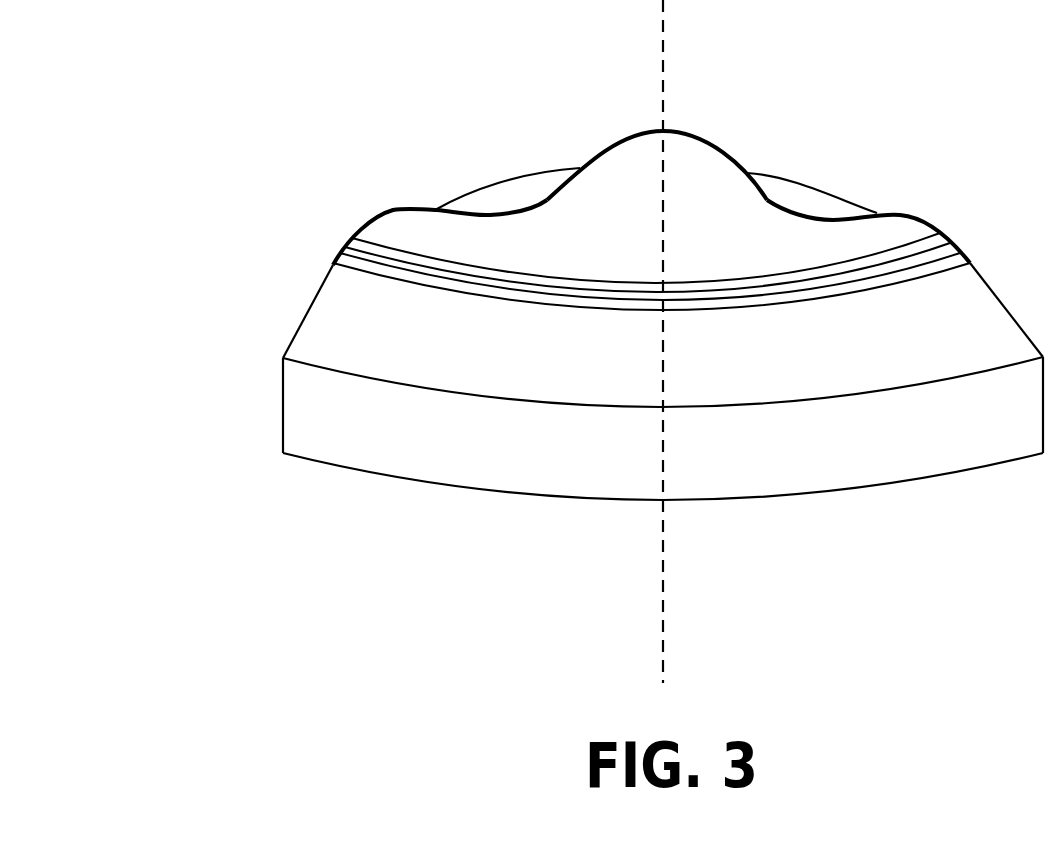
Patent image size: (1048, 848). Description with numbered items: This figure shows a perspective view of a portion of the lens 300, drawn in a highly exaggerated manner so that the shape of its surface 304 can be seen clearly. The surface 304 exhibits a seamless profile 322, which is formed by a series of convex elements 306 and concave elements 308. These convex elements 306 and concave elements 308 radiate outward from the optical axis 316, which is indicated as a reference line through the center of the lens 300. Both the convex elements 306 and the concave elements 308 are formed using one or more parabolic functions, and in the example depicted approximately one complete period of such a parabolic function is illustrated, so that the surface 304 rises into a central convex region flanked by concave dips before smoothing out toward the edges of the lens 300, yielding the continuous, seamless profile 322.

The lens 300 is at (256, 54).
The surface 304 is at (390, 209).
The convex elements 306 is at (652, 130).
The concave elements 308 is at (537, 207).
The optical axis 316 is at (663, 572).
The seamless profile 322 is at (742, 146).